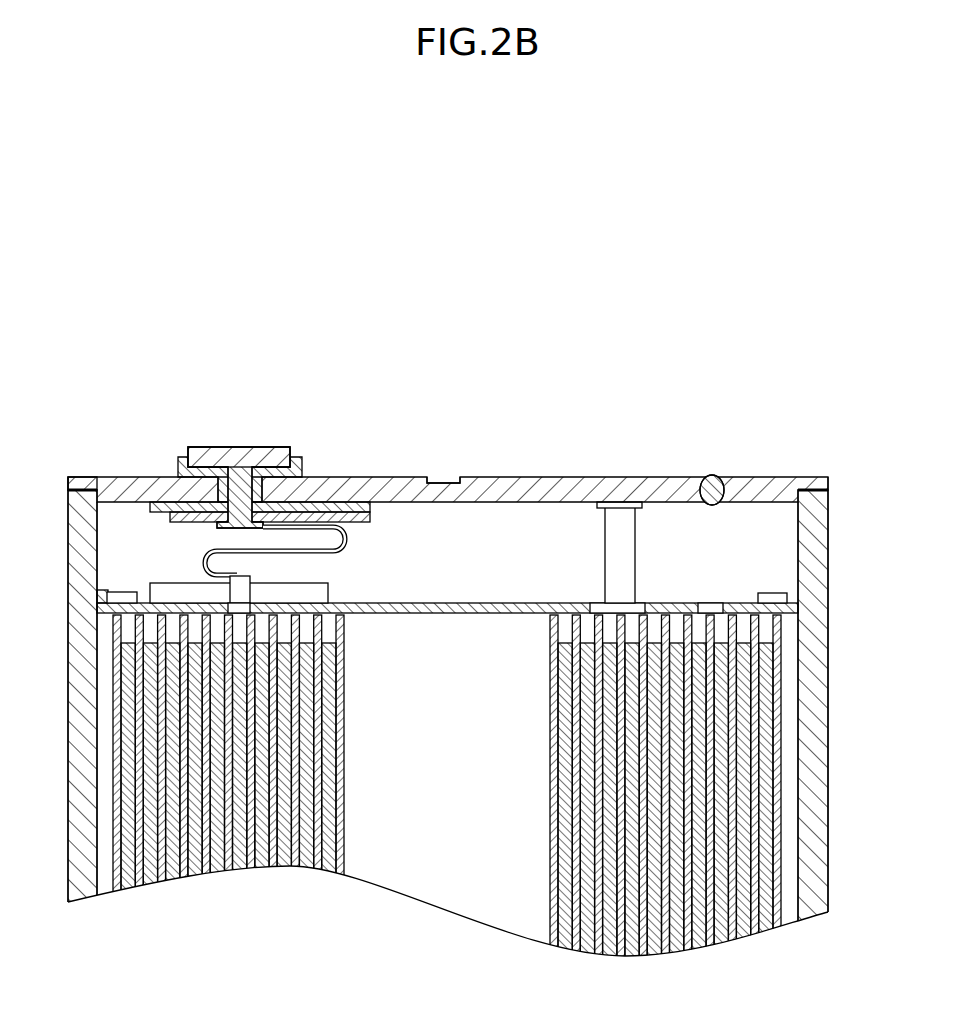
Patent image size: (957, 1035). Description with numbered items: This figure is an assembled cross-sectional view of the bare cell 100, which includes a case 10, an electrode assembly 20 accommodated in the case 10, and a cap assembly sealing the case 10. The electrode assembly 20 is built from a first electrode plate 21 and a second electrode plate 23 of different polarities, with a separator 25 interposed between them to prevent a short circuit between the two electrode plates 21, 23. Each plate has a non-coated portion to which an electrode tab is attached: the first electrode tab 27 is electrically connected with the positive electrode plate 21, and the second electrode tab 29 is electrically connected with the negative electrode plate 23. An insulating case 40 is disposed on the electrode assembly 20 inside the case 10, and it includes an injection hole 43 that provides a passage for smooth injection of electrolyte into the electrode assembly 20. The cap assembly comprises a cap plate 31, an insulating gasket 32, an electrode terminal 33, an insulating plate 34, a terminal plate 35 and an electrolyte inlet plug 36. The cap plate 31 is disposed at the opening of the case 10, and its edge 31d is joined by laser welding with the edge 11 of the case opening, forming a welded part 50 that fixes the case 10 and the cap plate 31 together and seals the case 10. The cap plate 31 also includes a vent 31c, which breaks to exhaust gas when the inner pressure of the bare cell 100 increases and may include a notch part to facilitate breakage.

The bare cell 100 is at (183, 405).
The case 10 is at (823, 791).
The edge of the opening of the case 11 is at (68, 500).
The electrode assembly 20 is at (501, 820).
The first electrode plate 21 is at (776, 936).
The second electrode plate 23 is at (752, 940).
The separator 25 is at (764, 938).
The first electrode tab 27 is at (628, 541).
The second electrode tab 29 is at (346, 543).
The cap plate 31 is at (602, 470).
The vent 31c is at (455, 478).
The edge of the cap plate 31d is at (79, 477).
The insulating gasket 32 is at (303, 462).
The electrode terminal 33 is at (257, 447).
The insulating plate 34 is at (333, 500).
The terminal plate 35 is at (365, 477).
The electrolyte inlet plug 36 is at (713, 476).
The insulating case 40 is at (800, 598).
The injection hole 43 is at (712, 602).
The welded part 50 is at (420, 453).